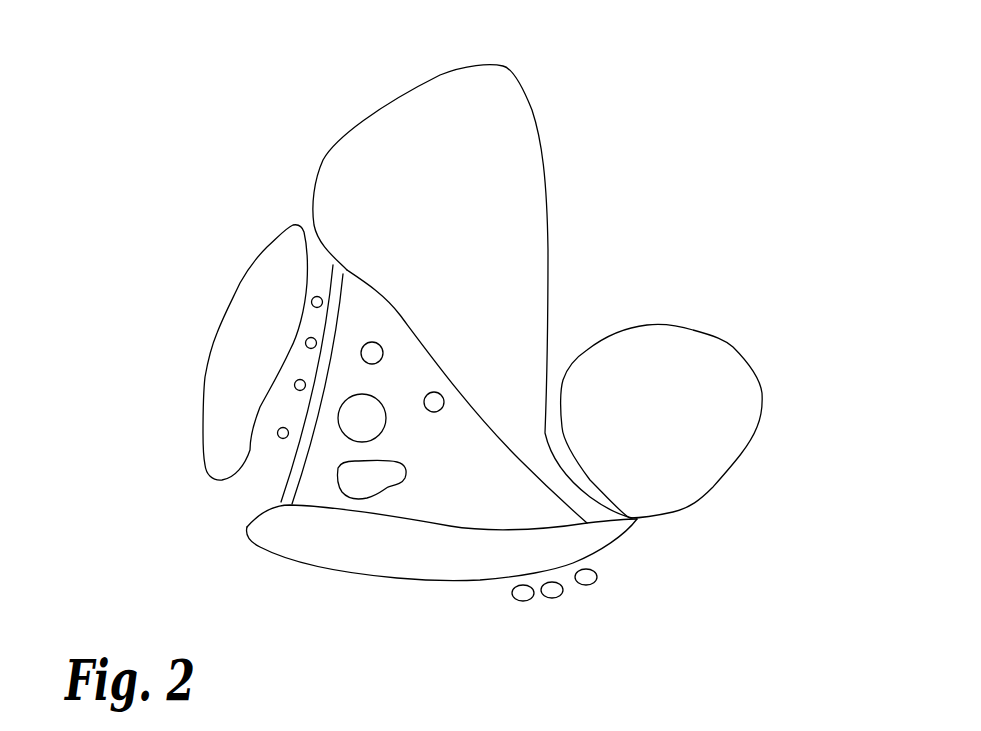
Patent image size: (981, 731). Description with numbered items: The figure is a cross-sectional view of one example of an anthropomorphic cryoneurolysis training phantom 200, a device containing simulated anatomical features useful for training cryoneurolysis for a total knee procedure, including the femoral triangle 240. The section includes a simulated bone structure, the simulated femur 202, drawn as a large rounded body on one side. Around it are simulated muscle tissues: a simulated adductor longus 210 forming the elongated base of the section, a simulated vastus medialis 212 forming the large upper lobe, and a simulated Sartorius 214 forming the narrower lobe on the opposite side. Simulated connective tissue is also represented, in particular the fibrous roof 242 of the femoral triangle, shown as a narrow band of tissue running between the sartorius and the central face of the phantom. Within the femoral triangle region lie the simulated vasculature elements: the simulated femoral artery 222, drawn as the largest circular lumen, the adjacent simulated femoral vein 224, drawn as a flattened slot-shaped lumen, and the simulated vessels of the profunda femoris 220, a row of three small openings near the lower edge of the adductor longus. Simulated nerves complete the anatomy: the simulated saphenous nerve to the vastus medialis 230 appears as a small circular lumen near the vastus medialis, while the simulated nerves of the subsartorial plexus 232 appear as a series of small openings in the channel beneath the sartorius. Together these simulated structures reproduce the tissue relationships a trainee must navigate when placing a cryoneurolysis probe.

The anthropomorphic cryoneurolysis training phantom 200 is at (752, 115).
The simulated femur 202 is at (693, 352).
The simulated adductor longus 210 is at (377, 552).
The simulated vastus medialis 212 is at (517, 163).
The simulated Sartorius 214 is at (237, 335).
The simulated vessels of the profunda femoris 220 is at (587, 595).
The simulated femoral artery 222 is at (352, 423).
The simulated femoral vein 224 is at (390, 473).
The simulated saphenous nerve to the vastus medialis 230 is at (372, 353).
The simulated nerves of the subsartorial plexus 232 is at (313, 263).
The femoral triangle 240 is at (475, 502).
The fibrous roof of the femoral triangle 242 is at (280, 487).